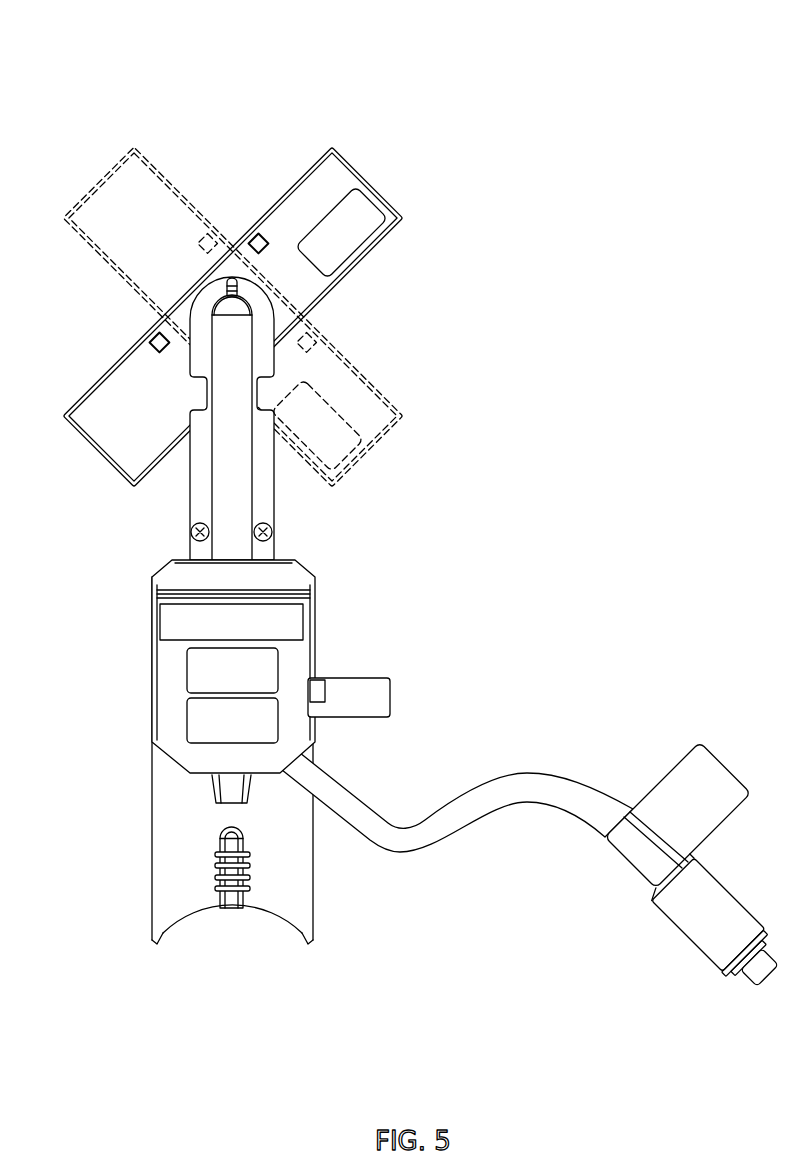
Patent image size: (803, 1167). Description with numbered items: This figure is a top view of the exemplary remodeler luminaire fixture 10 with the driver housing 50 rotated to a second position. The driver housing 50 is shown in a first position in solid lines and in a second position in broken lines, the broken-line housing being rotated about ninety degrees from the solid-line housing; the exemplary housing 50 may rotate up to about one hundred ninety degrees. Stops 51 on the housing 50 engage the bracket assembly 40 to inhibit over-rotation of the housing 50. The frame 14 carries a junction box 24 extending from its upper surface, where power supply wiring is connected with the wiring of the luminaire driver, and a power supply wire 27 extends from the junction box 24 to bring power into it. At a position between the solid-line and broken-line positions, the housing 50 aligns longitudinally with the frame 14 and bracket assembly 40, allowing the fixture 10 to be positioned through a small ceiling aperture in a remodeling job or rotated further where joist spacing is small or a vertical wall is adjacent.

The fixture 10 is at (554, 68).
The frame 14 is at (138, 865).
The junction box 24 is at (297, 670).
The power supply wire 27 is at (413, 843).
The bracket assembly 40 is at (292, 500).
The driver housing 50 is at (384, 293).
The stops 51 is at (256, 232).